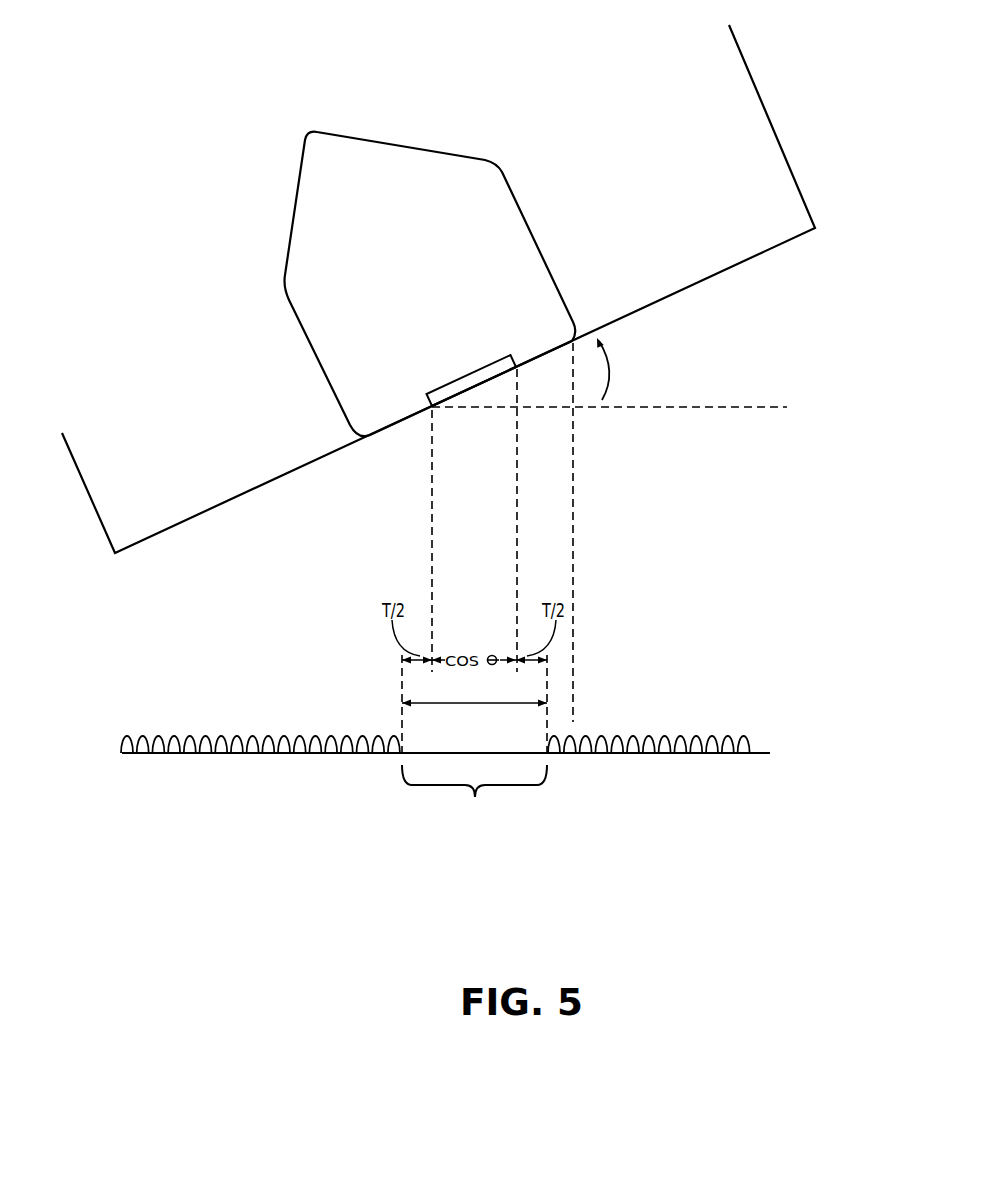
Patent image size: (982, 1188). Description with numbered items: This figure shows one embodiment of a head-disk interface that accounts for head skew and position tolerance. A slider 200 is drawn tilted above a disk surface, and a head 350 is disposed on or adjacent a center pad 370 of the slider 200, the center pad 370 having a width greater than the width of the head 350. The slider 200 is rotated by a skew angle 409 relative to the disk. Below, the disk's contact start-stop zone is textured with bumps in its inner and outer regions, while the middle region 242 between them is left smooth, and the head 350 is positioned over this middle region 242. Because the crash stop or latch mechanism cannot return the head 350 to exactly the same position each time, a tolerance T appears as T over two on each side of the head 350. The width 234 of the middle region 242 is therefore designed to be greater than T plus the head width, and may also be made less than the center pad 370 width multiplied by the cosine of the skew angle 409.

The slider 200 is at (772, 80).
The center pad 370 is at (523, 214).
The head 350 is at (458, 380).
The skew angle 409 is at (640, 358).
The width of middle region 234 is at (462, 706).
The middle region 242 is at (474, 826).